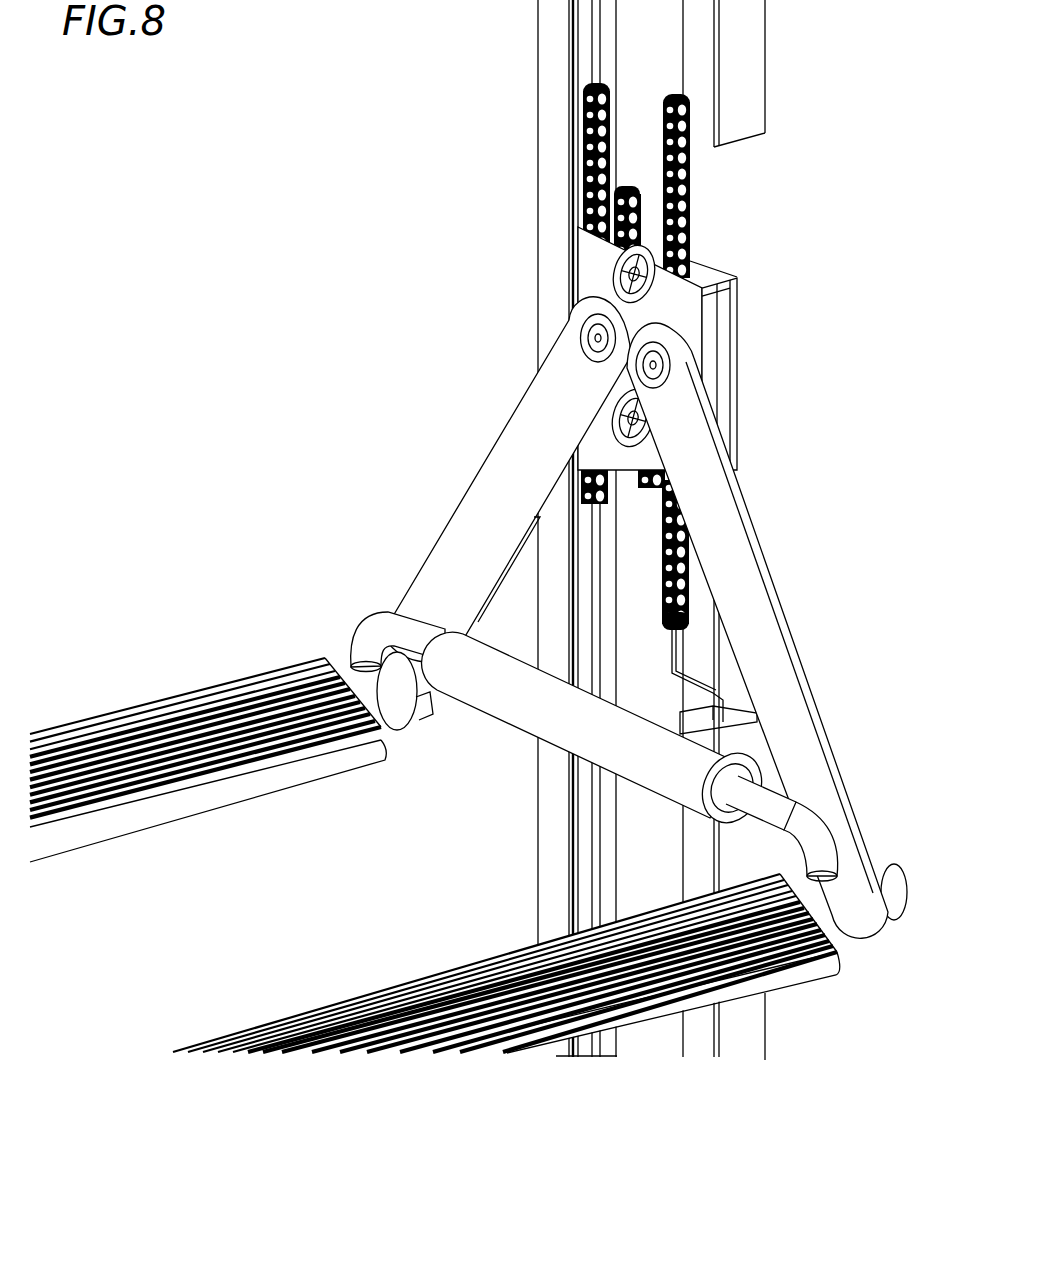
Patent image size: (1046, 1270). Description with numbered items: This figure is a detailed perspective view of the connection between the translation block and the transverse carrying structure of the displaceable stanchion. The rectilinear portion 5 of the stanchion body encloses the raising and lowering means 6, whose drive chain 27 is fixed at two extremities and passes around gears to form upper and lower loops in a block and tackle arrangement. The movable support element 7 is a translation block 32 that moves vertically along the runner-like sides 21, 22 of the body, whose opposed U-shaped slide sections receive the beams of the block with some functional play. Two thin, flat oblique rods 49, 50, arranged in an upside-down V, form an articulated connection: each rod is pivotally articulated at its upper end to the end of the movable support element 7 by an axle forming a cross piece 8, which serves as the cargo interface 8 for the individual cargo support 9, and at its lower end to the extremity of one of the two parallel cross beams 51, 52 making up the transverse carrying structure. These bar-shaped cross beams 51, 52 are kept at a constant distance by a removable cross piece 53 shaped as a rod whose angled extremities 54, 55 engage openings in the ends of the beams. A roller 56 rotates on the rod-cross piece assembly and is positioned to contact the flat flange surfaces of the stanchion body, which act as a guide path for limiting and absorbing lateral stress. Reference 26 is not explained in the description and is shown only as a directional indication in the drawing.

The rectilinear portion 5 is at (748, 228).
The raising and lowering means 6 is at (488, 197).
The movable support element 7 is at (768, 370).
The cargo interface 8 is at (597, 338).
The individual cargo support 9 is at (430, 446).
The runner-like side 21 is at (742, 1040).
The runner-like side 22 is at (556, 848).
The brush unit 26 is at (235, 886).
The drive chain 27 is at (702, 185).
The translation block 32 is at (688, 302).
The oblique rod 49 is at (773, 665).
The oblique rod 50 is at (470, 538).
The cross beam 51 is at (505, 1010).
The cross beam 52 is at (210, 713).
The removable cross piece 53 is at (468, 740).
The angled extremity 54 is at (810, 832).
The angled extremity 55 is at (368, 640).
The roller 56 is at (540, 720).